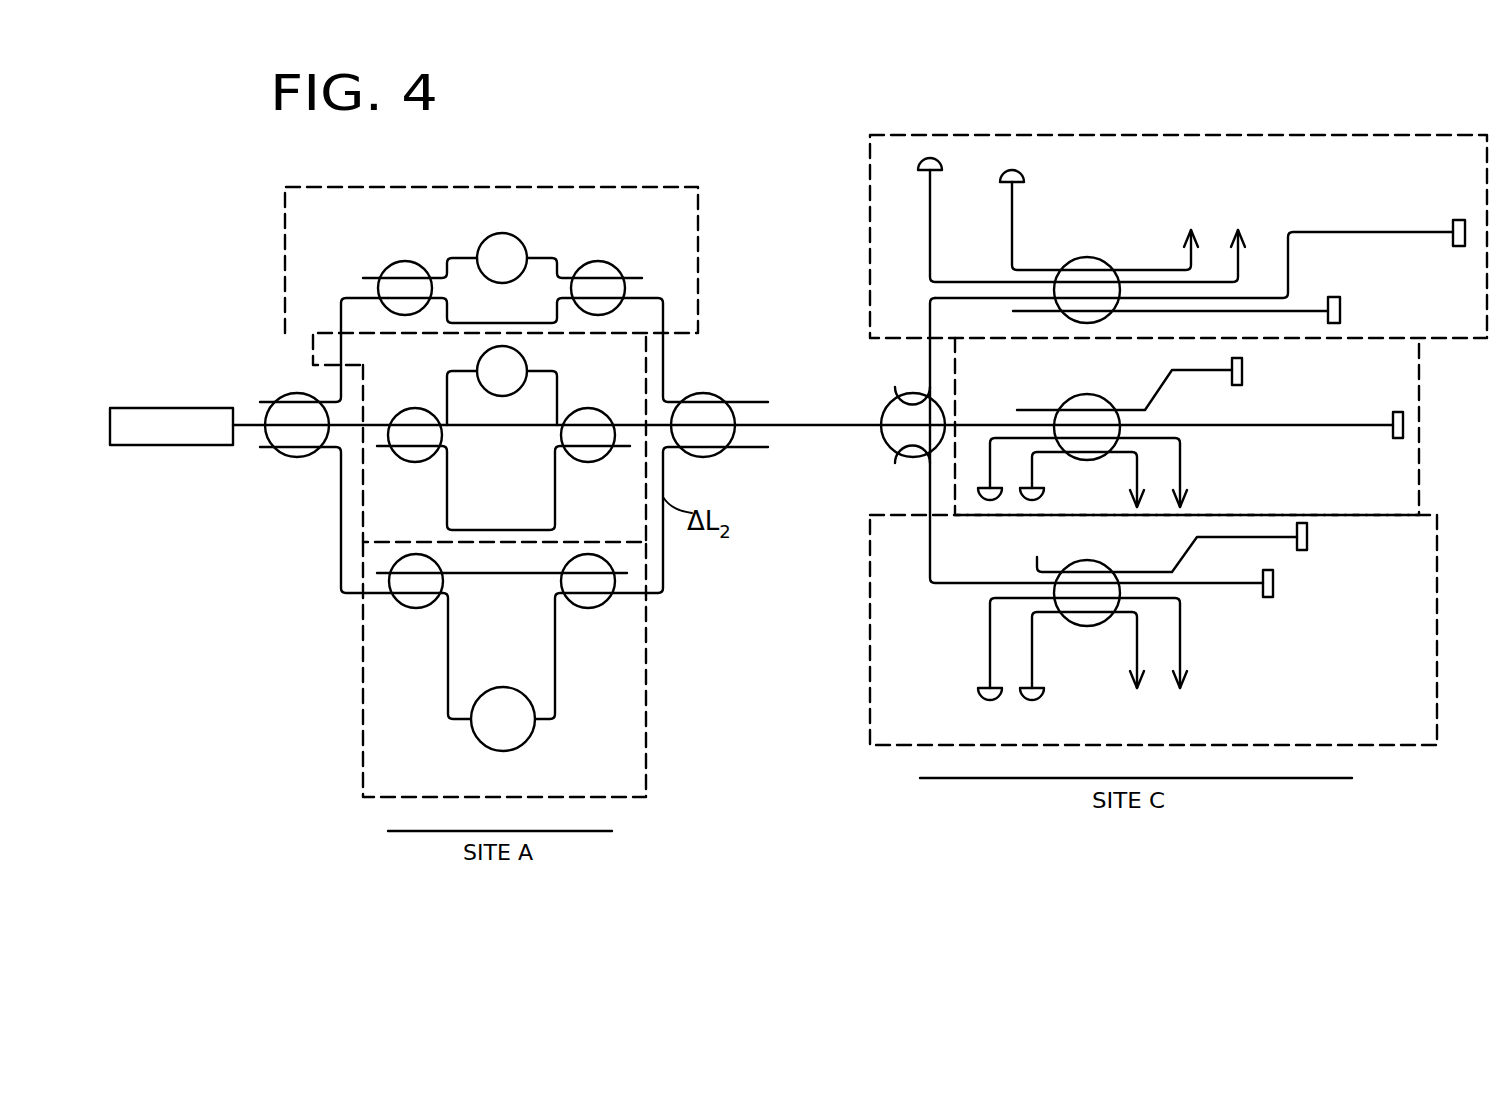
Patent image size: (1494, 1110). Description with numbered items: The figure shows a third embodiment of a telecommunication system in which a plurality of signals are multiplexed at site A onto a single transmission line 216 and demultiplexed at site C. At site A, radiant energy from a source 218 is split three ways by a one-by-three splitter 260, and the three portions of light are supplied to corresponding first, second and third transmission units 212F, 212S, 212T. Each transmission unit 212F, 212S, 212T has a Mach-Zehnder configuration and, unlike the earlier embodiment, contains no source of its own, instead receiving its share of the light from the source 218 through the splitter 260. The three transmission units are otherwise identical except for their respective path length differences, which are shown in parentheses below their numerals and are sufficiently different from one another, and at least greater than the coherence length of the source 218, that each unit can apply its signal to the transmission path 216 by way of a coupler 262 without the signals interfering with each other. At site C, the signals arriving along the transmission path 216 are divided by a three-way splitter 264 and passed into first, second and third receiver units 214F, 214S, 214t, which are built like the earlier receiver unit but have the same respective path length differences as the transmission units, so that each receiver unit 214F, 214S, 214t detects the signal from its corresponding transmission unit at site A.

The source 218 is at (198, 446).
The 1 by 3 splitter 260 is at (297, 457).
The first transmission unit 212F is at (698, 267).
The second transmission unit 212S is at (656, 365).
The third transmission unit 212T is at (646, 755).
The coupler 262 is at (702, 392).
The transmission line 216 is at (793, 425).
The three way splitter 264 is at (880, 411).
The first receiver unit 214F is at (1243, 133).
The second receiver unit 214S is at (1419, 490).
The third receiver unit 214t is at (1390, 744).